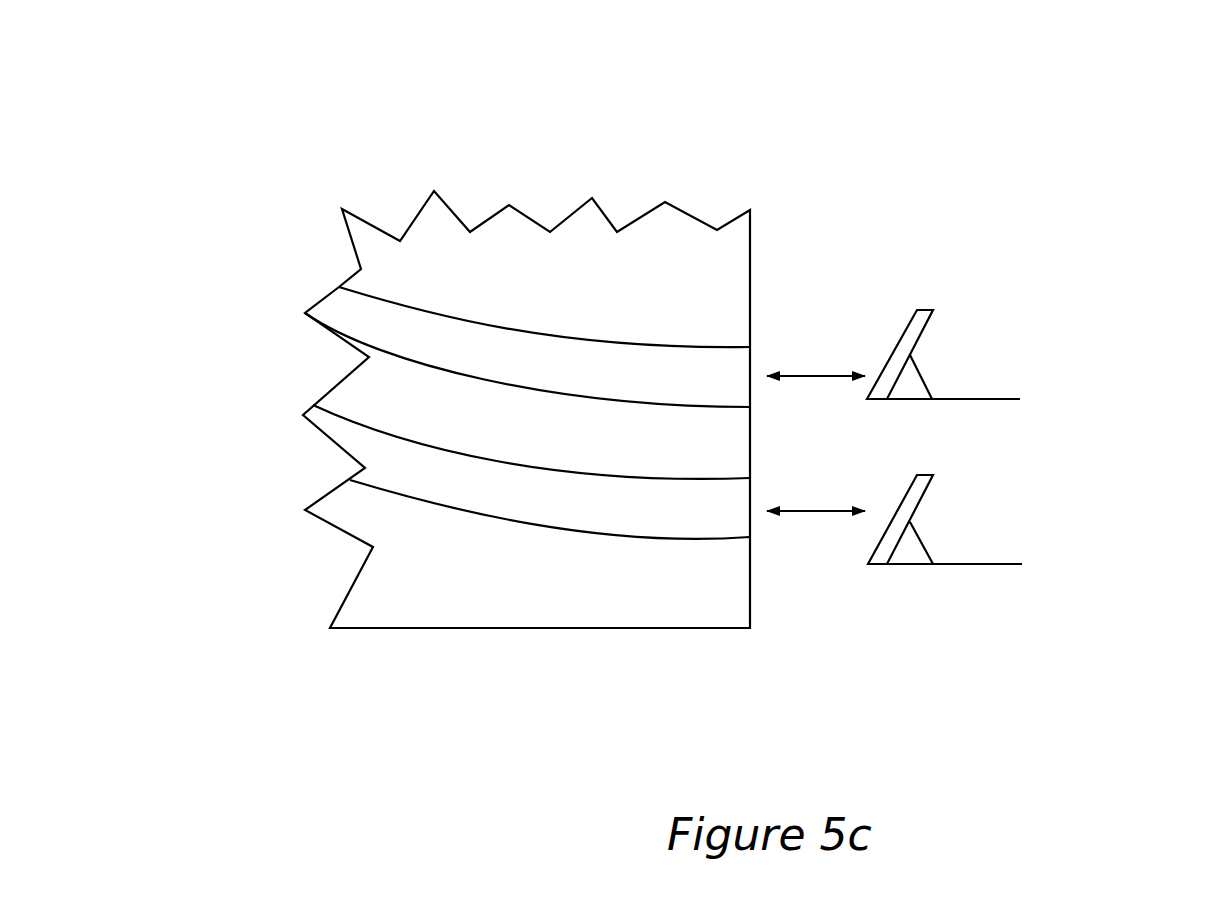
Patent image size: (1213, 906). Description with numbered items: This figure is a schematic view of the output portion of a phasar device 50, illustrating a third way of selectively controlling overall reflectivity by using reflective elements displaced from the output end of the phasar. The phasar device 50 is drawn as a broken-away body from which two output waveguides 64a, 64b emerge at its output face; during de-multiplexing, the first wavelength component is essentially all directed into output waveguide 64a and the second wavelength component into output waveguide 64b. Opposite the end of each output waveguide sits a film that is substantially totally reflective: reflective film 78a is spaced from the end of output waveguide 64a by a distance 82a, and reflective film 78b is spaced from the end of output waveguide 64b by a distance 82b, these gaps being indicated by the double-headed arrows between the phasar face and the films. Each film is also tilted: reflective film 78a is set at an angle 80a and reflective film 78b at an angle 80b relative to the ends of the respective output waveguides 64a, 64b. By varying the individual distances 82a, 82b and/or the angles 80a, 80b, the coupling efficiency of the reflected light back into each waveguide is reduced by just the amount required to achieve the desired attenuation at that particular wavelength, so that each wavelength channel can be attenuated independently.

The phasar device 50 is at (275, 178).
The output waveguide 64a is at (573, 335).
The output waveguide 64b is at (560, 532).
The reflective film 78a is at (935, 313).
The reflective film 78b is at (935, 478).
The angle theta-one 80a is at (1005, 375).
The angle theta-two 80b is at (1023, 538).
The distance g1 82a is at (837, 333).
The distance g2 82b is at (817, 518).